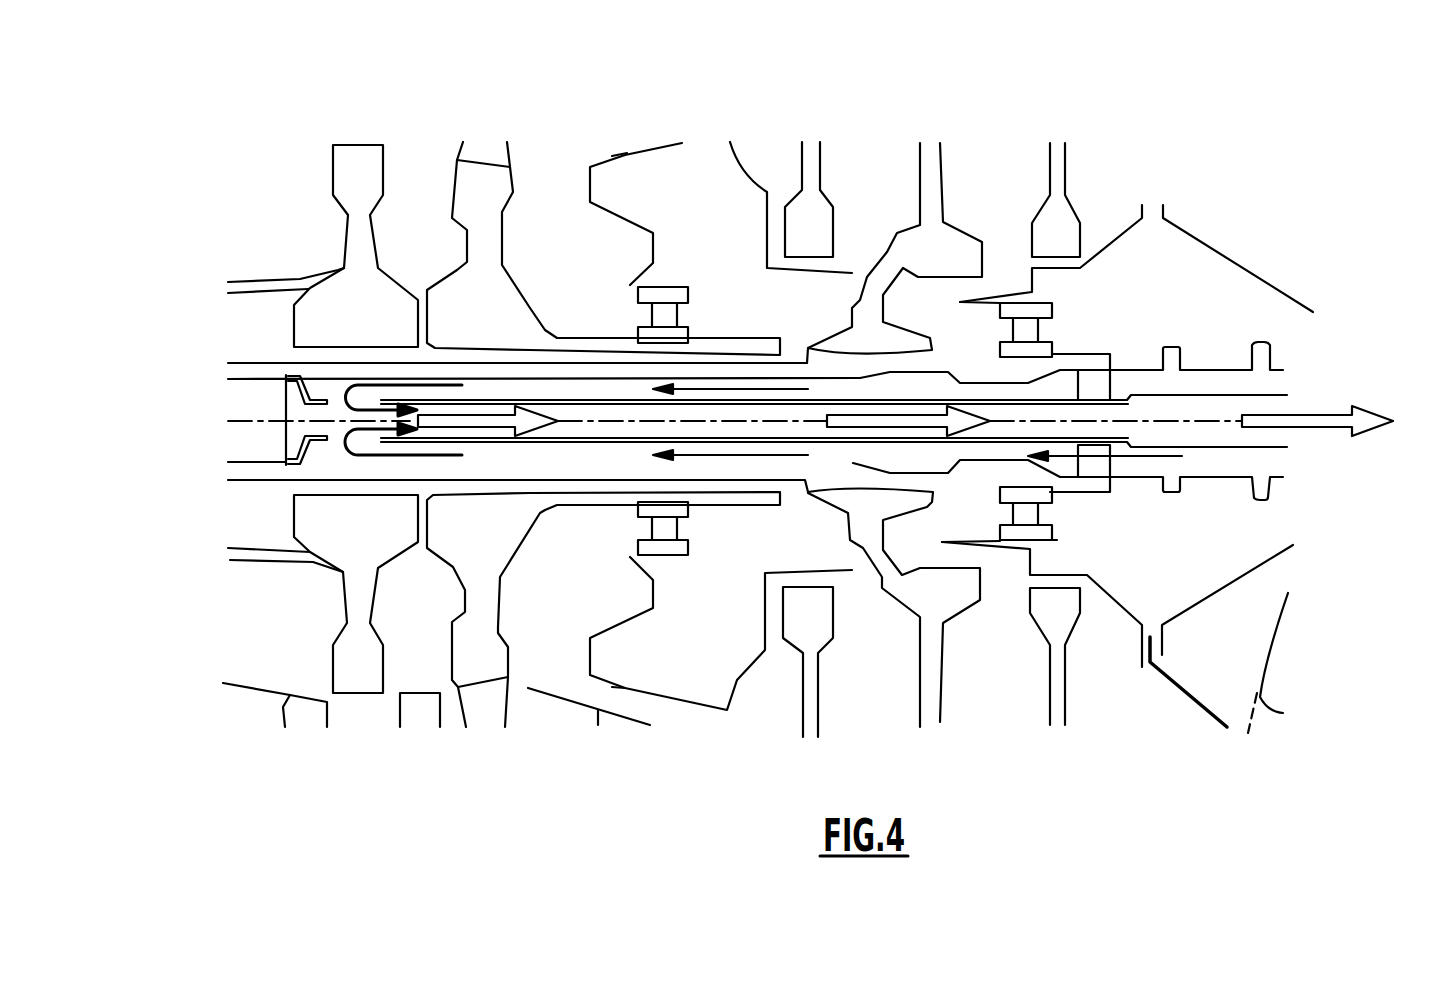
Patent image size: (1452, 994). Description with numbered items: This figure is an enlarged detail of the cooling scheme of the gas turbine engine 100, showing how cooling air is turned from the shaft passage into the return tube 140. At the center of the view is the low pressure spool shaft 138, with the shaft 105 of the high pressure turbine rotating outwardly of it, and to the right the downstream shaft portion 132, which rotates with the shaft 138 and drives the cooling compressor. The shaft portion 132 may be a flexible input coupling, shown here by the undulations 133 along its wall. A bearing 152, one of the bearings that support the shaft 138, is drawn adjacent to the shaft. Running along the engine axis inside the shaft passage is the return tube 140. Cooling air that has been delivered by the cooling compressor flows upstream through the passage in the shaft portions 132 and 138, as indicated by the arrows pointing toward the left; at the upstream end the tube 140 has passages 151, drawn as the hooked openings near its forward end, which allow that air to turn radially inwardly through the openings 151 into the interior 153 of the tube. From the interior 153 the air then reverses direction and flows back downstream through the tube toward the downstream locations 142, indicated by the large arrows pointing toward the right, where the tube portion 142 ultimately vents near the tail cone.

The engine 100 is at (222, 170).
The shaft 105 is at (278, 283).
The shaft 138 is at (263, 363).
The passages 151 is at (362, 398).
The return tube 140 is at (287, 428).
The interior of the tube 153 is at (640, 432).
The bearing 152 is at (1013, 332).
The downstream shaft portion 132 is at (1140, 377).
The undulations 133 is at (1163, 492).
The tube portion 142 is at (1257, 408).